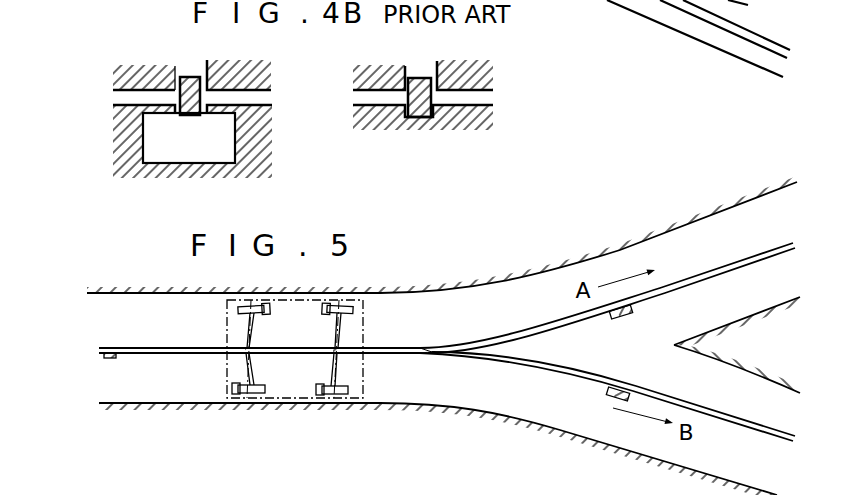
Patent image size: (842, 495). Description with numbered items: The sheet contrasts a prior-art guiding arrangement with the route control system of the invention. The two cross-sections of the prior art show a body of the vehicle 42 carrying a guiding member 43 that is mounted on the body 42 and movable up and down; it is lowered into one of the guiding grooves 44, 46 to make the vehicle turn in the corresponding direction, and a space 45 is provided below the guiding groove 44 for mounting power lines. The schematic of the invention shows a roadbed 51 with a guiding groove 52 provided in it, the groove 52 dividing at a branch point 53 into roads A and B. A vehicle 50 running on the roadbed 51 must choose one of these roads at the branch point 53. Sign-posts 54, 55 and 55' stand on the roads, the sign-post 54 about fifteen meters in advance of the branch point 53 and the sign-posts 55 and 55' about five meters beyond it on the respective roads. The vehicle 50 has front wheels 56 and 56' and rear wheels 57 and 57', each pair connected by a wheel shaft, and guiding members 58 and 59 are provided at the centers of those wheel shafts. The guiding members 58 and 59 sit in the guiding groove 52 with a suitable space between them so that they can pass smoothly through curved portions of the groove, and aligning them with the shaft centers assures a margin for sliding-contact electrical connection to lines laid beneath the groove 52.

In FIG. 4B, the body of the vehicle 42 is at (249, 70).
In FIG. 4B, the guiding member 43 is at (194, 98).
In FIG. 4B, the guiding groove 44 is at (176, 123).
In FIG. 4B, the space 45 is at (236, 152).
In FIG. 4B, the guiding groove 46 is at (431, 118).
In FIG. 5, the vehicle 50 is at (364, 366).
In FIG. 5, the roadbed 51 is at (441, 297).
In FIG. 5, the guiding groove 52 is at (147, 357).
In FIG. 5, the branch point 53 is at (424, 355).
In FIG. 5, the sign-post 54 is at (104, 357).
In FIG. 5, the sign-post 55 is at (632, 331).
In FIG. 5, the sign-post 55' is at (582, 400).
In FIG. 5, the front wheel 56 is at (319, 325).
In FIG. 5, the front wheel 56' is at (335, 397).
In FIG. 5, the rear wheel 57 is at (225, 325).
In FIG. 5, the rear wheel 57' is at (247, 396).
In FIG. 5, the guiding member 58 is at (338, 349).
In FIG. 5, the guiding member 59 is at (247, 353).